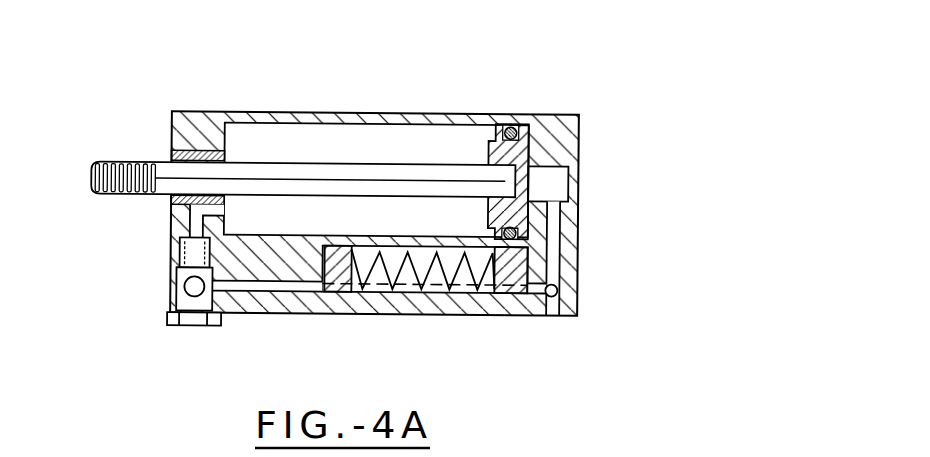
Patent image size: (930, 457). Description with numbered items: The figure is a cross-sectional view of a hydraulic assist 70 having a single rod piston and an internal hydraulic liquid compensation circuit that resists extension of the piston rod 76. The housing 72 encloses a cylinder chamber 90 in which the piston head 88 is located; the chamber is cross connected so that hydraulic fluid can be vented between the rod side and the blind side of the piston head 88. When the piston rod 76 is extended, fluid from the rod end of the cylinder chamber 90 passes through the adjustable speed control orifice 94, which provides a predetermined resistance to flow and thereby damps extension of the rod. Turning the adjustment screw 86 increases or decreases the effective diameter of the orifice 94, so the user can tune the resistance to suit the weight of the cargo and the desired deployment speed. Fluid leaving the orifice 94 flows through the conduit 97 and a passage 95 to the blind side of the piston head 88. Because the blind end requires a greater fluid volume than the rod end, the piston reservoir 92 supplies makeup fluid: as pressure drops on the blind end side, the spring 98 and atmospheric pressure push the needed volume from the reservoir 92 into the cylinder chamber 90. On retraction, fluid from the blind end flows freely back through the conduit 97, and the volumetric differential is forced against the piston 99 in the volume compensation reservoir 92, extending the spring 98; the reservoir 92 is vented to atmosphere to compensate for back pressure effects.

The assist 70 is at (352, 190).
The housing 72 is at (411, 216).
The piston rod 76 is at (148, 162).
The adjustment screw 86 is at (188, 328).
The piston head 88 is at (488, 155).
The cylinder chamber 90 is at (373, 128).
The piston reservoir 92 is at (435, 290).
The adjustable speed control orifice 94 is at (190, 289).
The vertical passage 95 is at (555, 245).
The conduit 97 is at (260, 288).
The spring 98 is at (407, 284).
The piston 99 is at (338, 288).